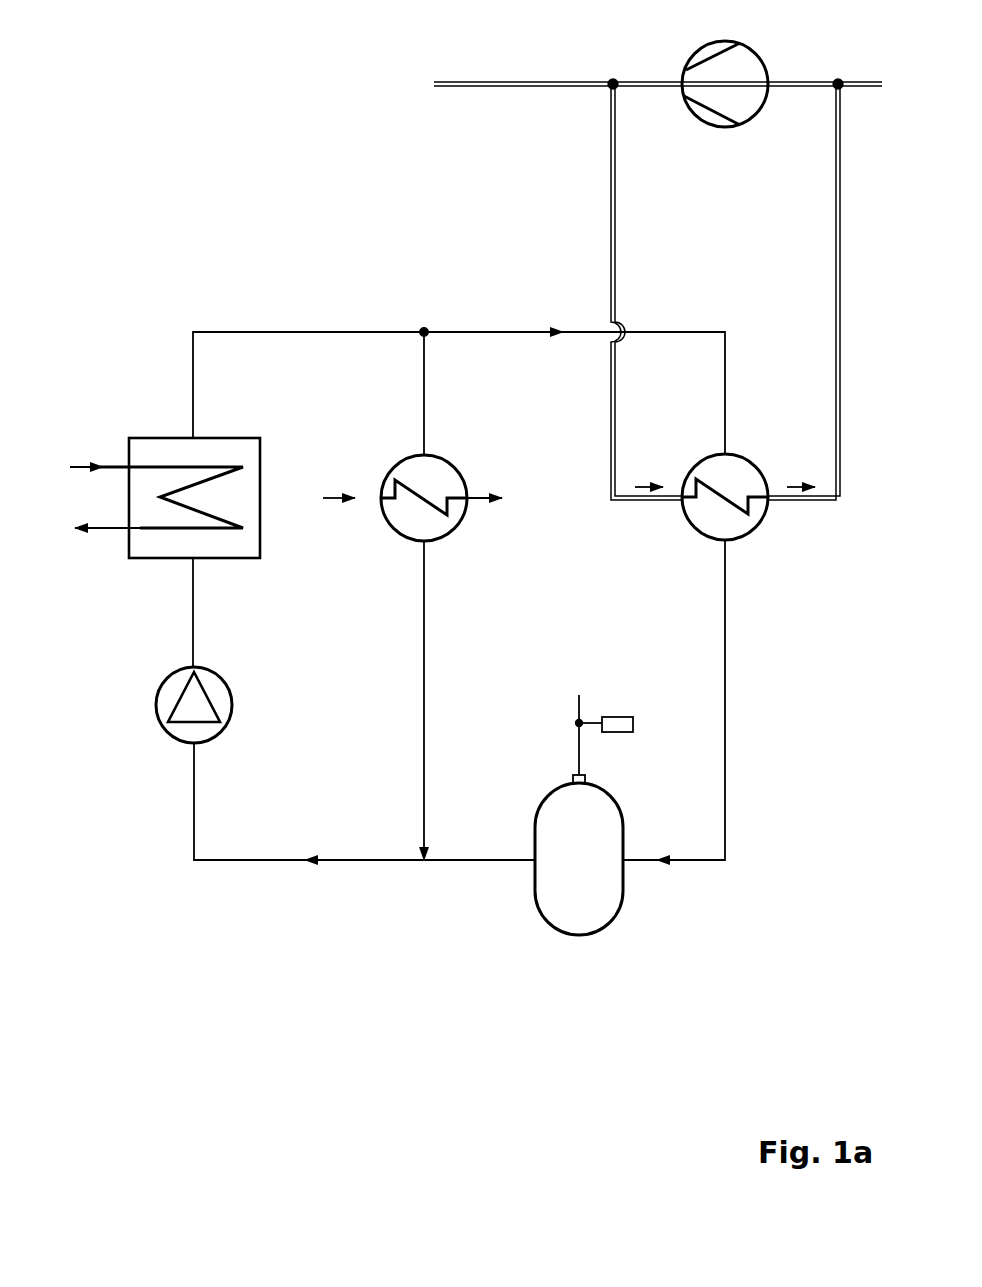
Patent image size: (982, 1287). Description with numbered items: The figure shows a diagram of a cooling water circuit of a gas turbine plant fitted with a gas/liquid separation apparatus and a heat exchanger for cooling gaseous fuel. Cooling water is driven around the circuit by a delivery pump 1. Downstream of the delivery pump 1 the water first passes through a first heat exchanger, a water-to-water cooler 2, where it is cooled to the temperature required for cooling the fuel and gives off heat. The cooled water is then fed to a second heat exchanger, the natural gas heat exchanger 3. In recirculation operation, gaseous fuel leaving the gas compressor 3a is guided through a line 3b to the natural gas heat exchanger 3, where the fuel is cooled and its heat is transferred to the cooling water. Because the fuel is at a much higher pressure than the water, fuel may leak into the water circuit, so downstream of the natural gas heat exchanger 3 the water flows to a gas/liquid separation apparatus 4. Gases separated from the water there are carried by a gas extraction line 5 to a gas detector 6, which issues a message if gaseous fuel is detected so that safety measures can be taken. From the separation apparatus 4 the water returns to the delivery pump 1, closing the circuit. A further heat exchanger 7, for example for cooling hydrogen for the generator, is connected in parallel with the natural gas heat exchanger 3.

The delivery pump 1 is at (195, 708).
The water-to-water cooler 2 is at (160, 455).
The natural gas heat exchanger 3 is at (737, 522).
The gas compressor 3a is at (718, 95).
The line 3b is at (836, 208).
The gas/liquid separation apparatus 4 is at (579, 893).
The gas extraction line 5 is at (579, 757).
The gas detector 6 is at (620, 723).
The heat exchanger 7 is at (417, 475).